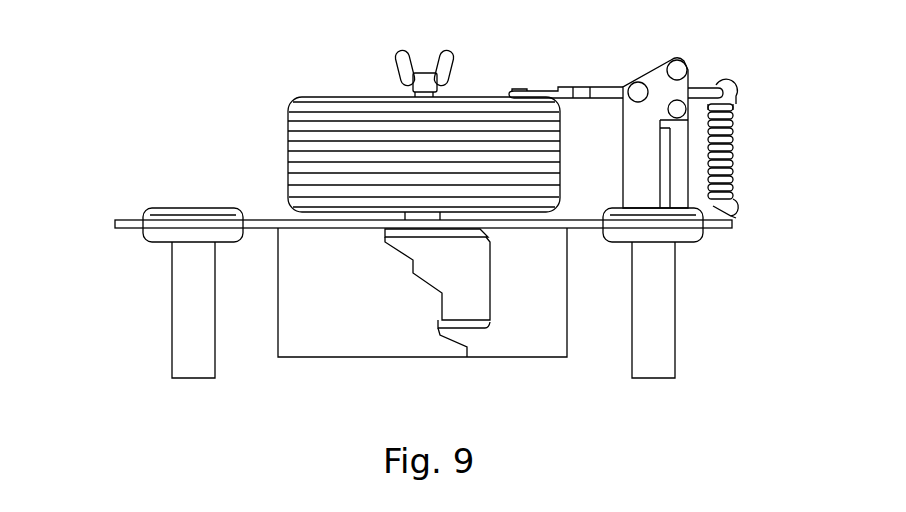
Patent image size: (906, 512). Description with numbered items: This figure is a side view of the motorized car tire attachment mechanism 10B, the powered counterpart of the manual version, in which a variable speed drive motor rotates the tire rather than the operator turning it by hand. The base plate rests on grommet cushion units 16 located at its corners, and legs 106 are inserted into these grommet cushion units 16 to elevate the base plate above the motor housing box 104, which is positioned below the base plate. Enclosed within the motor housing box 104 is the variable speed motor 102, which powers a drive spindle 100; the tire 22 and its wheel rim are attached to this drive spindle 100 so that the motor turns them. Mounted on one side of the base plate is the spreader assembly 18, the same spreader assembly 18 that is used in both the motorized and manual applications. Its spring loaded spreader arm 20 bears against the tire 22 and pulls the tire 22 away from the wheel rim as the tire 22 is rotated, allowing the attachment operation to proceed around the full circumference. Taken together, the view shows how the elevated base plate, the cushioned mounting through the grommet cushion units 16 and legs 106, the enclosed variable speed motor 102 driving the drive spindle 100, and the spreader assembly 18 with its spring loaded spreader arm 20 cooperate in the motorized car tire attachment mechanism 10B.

The motorized car tire attachment mechanism 10B is at (155, 137).
The grommet cushion units 16 is at (155, 208).
The spreader assembly 18 is at (712, 65).
The spring loaded spreader arm 20 is at (567, 86).
The tire 22 is at (310, 158).
The drive spindle 100 is at (398, 78).
The variable speed motor 102 is at (470, 273).
The motor housing box 104 is at (338, 345).
The legs 106 is at (182, 355).